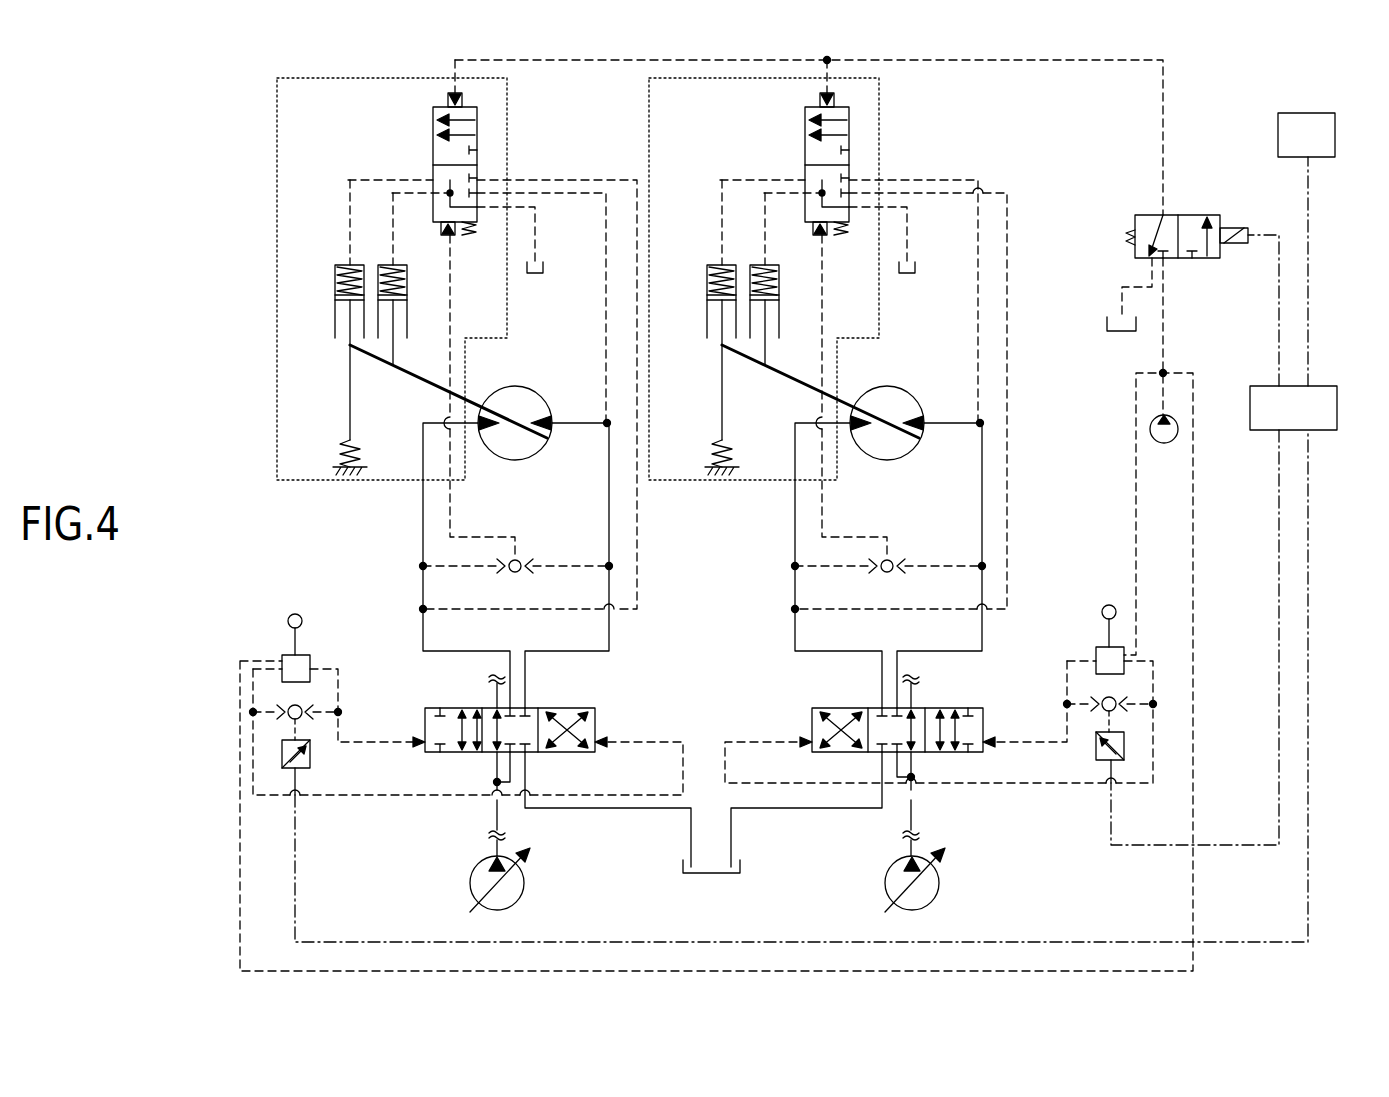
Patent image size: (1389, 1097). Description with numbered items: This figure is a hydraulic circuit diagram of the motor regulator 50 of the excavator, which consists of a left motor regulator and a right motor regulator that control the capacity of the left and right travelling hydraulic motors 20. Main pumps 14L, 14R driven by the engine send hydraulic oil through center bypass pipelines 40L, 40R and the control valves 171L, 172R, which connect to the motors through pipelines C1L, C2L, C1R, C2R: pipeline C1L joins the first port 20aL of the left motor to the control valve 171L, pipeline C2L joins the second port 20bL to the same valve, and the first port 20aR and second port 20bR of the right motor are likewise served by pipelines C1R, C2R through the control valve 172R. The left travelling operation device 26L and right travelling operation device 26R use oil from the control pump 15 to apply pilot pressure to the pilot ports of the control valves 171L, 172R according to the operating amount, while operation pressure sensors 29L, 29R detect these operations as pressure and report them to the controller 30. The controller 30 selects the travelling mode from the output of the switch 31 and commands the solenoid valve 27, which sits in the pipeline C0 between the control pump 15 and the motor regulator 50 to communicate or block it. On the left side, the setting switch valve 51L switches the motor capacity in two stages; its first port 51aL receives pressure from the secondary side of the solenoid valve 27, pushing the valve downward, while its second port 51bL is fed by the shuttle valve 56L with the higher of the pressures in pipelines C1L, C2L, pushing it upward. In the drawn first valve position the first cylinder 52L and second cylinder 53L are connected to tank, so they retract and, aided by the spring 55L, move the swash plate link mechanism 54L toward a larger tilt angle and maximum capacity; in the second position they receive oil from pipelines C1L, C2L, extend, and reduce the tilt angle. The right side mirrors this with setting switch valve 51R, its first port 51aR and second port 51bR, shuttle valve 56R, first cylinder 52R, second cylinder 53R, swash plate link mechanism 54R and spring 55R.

The pipeline C0 is at (1018, 62).
The motor regulator 50 is at (277, 138).
The setting switch valve 51L is at (433, 156).
The first port 51aL is at (448, 101).
The second port 51bL is at (441, 228).
The first cylinder 52L is at (334, 272).
The second cylinder 53L is at (407, 318).
The swash plate link mechanism 54L is at (413, 370).
The spring 55L is at (336, 434).
The travelling hydraulic motor 20 is at (915, 352).
The first port 20aL is at (481, 438).
The second port 20bL is at (546, 436).
The pipeline C1L is at (423, 566).
The pipeline C2L is at (609, 566).
The shuttle valve 56L is at (527, 570).
The setting switch valve 51R is at (805, 156).
The first port 51aR is at (820, 101).
The second port 51bR is at (813, 228).
The first cylinder 52R is at (706, 272).
The second cylinder 53R is at (779, 318).
The swash plate link mechanism 54R is at (785, 370).
The spring 55R is at (708, 434).
The first port 20aR is at (853, 438).
The second port 20bR is at (918, 436).
The pipeline C1R is at (980, 566).
The pipeline C2R is at (795, 566).
The shuttle valve 56R is at (899, 570).
The control valve 171L is at (585, 708).
The control valve 172R is at (818, 708).
The center bypass pipeline 40L is at (482, 702).
The center bypass pipeline 40R is at (920, 698).
The main pump 14L is at (520, 876).
The main pump 14R is at (886, 876).
The left travelling operation device 26L is at (310, 660).
The right travelling operation device 26R is at (1096, 652).
The operation pressure sensor 29L is at (311, 756).
The operation pressure sensor 29R is at (1096, 748).
The solenoid valve 27 is at (1213, 216).
The control pump 15 is at (1164, 443).
The controller 30 is at (1320, 386).
The switch 31 is at (1308, 113).